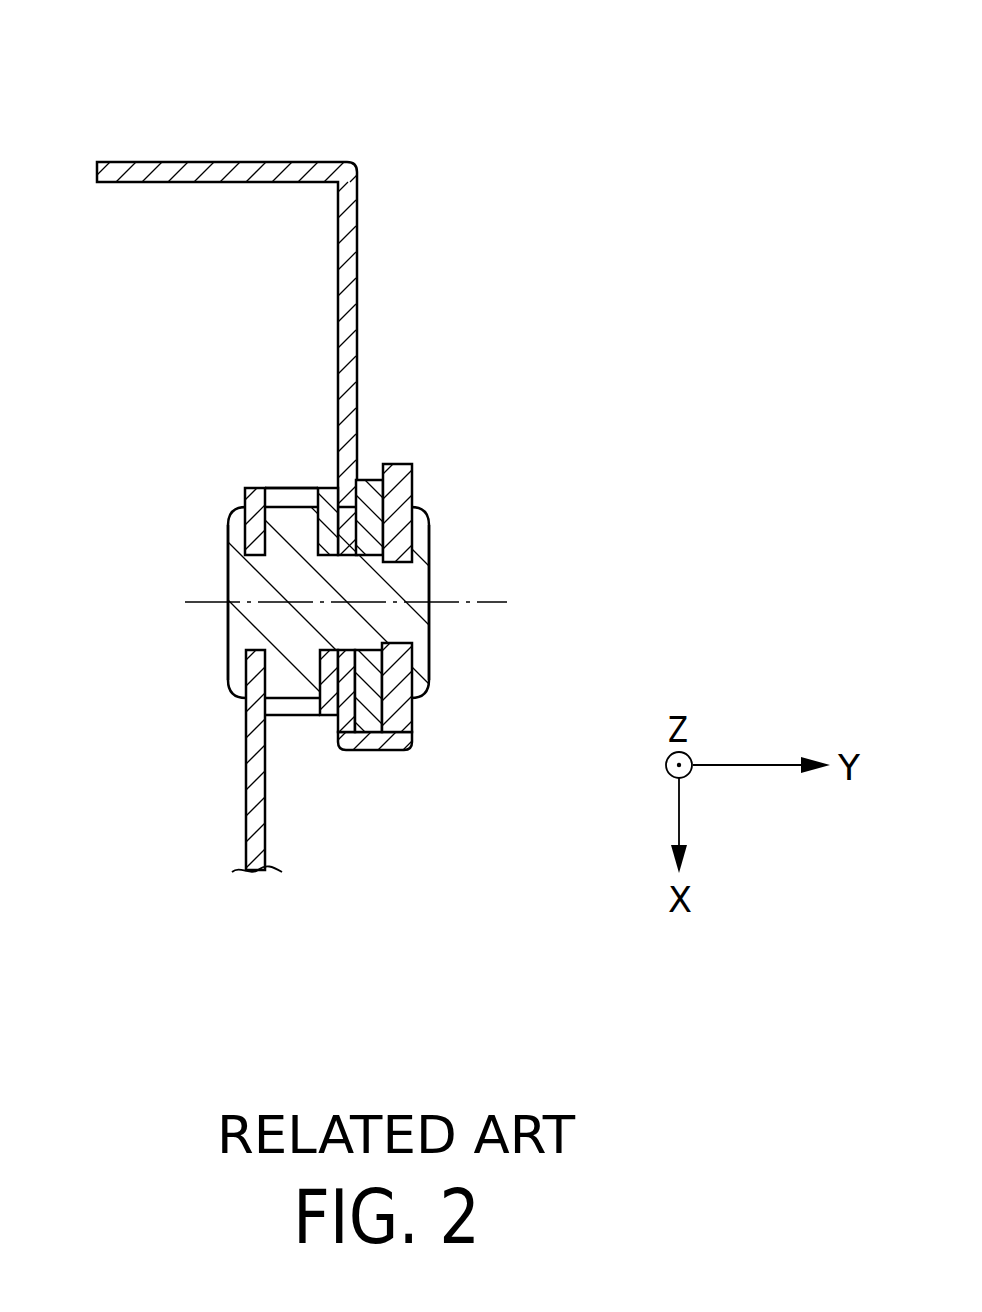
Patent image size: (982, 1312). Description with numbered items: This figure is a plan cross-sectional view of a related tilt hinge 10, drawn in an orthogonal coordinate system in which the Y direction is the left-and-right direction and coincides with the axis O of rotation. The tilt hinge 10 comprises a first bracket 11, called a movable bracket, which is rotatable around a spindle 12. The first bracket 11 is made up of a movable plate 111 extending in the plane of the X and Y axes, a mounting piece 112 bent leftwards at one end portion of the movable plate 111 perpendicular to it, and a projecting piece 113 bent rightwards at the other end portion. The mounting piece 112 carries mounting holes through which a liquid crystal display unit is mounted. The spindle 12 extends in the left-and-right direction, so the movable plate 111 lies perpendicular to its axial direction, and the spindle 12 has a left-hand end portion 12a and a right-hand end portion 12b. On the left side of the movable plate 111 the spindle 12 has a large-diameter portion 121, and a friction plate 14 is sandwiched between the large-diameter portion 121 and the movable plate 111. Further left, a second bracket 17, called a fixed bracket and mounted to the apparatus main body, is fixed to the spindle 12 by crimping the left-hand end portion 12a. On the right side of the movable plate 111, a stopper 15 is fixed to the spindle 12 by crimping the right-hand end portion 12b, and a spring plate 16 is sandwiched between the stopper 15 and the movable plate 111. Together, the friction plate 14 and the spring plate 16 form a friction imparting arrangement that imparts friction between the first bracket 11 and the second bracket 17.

The tilt hinge 10 is at (383, 109).
The first bracket 11 is at (358, 210).
The movable plate 111 is at (357, 318).
The mounting piece 112 is at (168, 162).
The projecting piece 113 is at (393, 745).
The spindle 12 is at (323, 628).
The left-hand end portion 12a is at (228, 553).
The right-hand end portion 12b is at (410, 663).
The large-diameter portion 121 is at (273, 513).
The friction plate 14 is at (331, 497).
The stopper 15 is at (397, 485).
The spring plate 16 is at (370, 480).
The second bracket 17 is at (250, 807).
The axis of rotation O is at (497, 602).